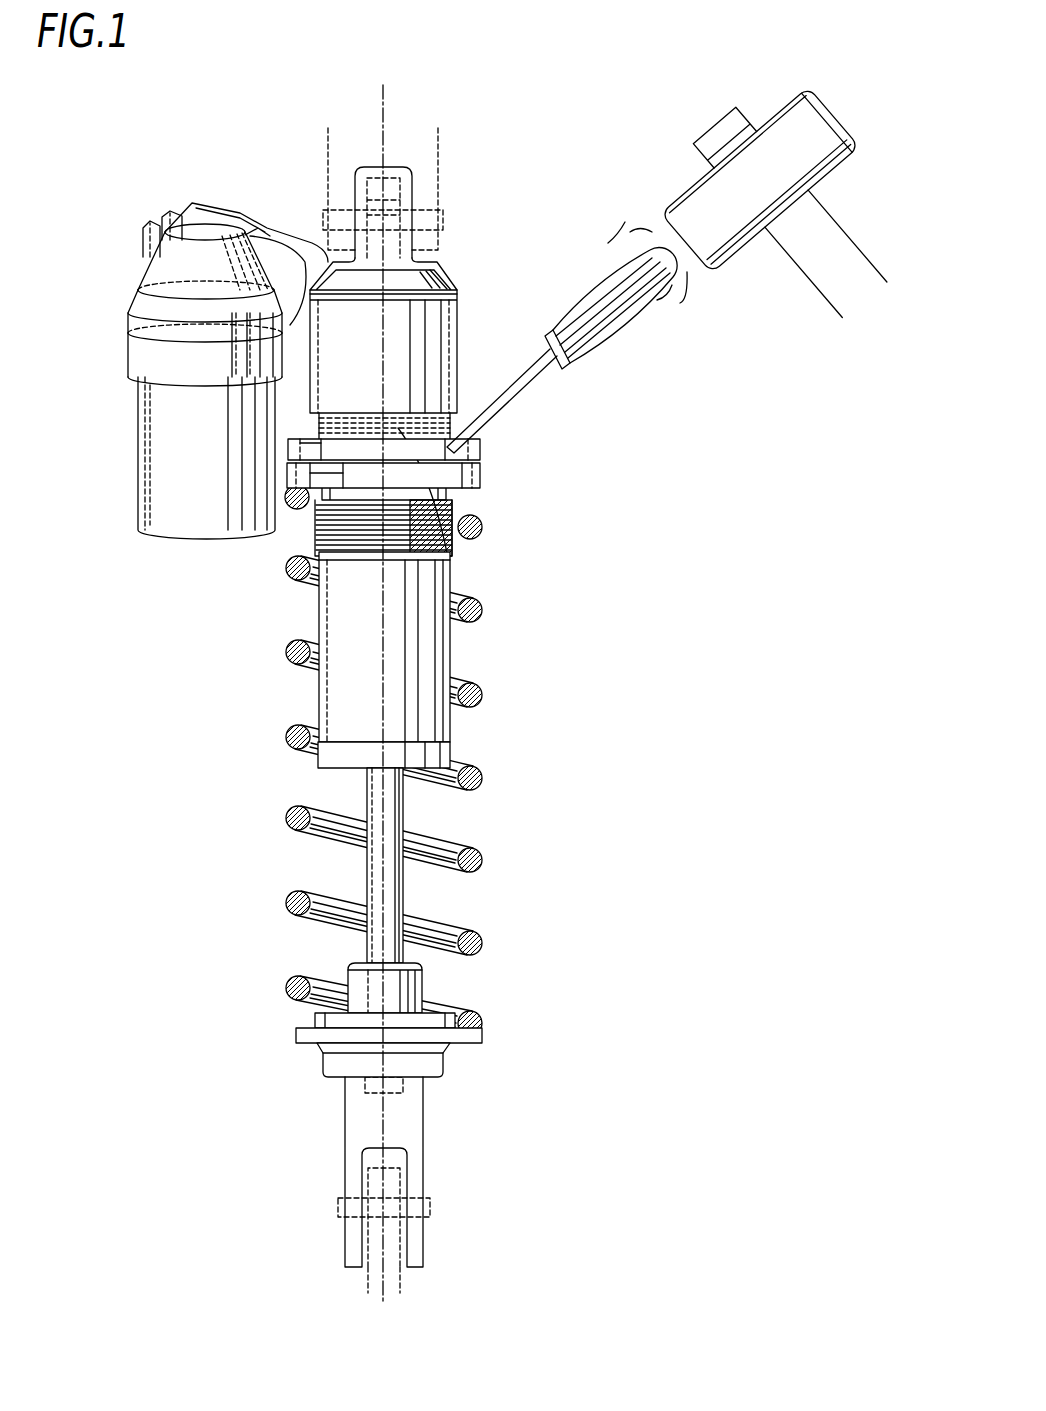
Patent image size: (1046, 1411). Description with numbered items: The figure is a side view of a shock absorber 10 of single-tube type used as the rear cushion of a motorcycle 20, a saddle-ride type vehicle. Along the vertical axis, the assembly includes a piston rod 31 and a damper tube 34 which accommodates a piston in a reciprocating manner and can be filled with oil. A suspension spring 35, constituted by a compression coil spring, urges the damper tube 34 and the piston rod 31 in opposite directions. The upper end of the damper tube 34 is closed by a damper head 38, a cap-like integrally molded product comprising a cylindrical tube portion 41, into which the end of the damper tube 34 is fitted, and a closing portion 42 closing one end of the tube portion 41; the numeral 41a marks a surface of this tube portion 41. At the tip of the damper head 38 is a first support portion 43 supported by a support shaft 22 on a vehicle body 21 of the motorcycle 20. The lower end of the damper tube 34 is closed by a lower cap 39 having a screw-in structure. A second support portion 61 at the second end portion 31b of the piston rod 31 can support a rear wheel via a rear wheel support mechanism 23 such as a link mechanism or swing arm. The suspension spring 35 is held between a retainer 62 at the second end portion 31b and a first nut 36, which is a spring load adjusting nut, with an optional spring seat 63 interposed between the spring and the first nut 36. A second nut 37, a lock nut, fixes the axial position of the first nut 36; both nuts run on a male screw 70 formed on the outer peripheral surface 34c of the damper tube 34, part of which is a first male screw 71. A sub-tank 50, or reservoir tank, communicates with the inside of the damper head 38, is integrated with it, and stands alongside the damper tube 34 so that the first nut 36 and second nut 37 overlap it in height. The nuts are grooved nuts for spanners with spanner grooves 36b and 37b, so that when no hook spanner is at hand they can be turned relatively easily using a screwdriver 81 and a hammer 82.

The shock absorber 10 is at (208, 165).
The motorcycle 20 is at (419, 157).
The vehicle body 21 is at (440, 155).
The support shaft 22 is at (445, 220).
The rear wheel support mechanism 23 is at (402, 1280).
The piston rod 31 is at (463, 936).
The second end portion of piston rod 31b is at (443, 1068).
The damper tube 34 is at (418, 647).
The outer peripheral surface of damper tube 34c is at (347, 685).
The suspension spring 35 is at (472, 858).
The first nut 36 is at (389, 533).
The spanner groove of first nut 36b is at (337, 473).
The second nut 37 is at (359, 497).
The spanner groove of second nut 37b is at (300, 450).
The damper head 38 is at (419, 270).
The lower cap 39 is at (456, 753).
The tube portion 41 is at (414, 349).
The side surface of damper case 41a is at (443, 367).
The closing portion 42 is at (440, 276).
The first support portion 43 is at (368, 183).
The sub-tank 50 is at (165, 446).
The second support portion 61 is at (416, 1195).
The retainer 62 is at (476, 1033).
The spring seat 63 is at (468, 492).
The male screw 70 is at (420, 561).
The first male screw 71 is at (453, 542).
The screwdriver 81 is at (627, 332).
The hammer 82 is at (823, 118).